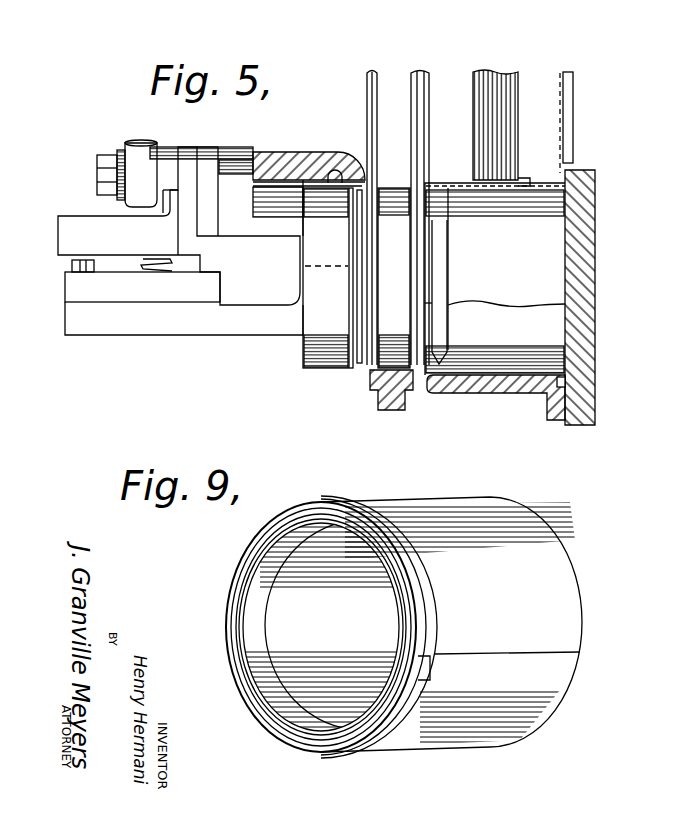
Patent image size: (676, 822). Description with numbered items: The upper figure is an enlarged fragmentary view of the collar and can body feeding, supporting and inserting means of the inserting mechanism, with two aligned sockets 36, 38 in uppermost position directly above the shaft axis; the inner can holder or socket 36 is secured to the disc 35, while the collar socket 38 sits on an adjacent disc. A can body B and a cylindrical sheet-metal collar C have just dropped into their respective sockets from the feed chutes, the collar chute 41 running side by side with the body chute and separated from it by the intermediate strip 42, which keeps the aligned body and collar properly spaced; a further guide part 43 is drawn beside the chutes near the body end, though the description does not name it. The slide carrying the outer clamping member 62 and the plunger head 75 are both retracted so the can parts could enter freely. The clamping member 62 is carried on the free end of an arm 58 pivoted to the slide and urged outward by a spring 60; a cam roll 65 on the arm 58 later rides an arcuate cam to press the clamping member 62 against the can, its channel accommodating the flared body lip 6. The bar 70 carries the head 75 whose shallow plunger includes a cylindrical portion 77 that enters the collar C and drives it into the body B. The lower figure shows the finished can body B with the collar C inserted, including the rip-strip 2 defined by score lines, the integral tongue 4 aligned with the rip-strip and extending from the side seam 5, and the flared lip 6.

In FIG. 5, the rip-strip 2 is at (448, 243).
In FIG. 9, the rip-strip 2 is at (393, 506).
In FIG. 9, the tongue 4 is at (430, 680).
In FIG. 9, the side seam 5 is at (535, 652).
In FIG. 5, the body lip 6 is at (428, 184).
In FIG. 9, the body lip 6 is at (228, 590).
In FIG. 5, the can body B is at (495, 266).
In FIG. 9, the can body B is at (530, 610).
In FIG. 5, the collar C is at (391, 190).
In FIG. 9, the collar C is at (258, 682).
In FIG. 5, the disc 35 is at (596, 208).
In FIG. 5, the socket 36 is at (521, 381).
In FIG. 5, the socket 38 is at (375, 383).
In FIG. 5, the chute 41 is at (367, 73).
In FIG. 5, the intermediate strip 42 is at (416, 73).
In FIG. 5, the knurled sleeve 43 is at (522, 178).
In FIG. 5, the arm 58 is at (76, 216).
In FIG. 5, the spring 60 is at (172, 263).
In FIG. 5, the clamping member 62 is at (300, 160).
In FIG. 5, the cam roll 65 is at (152, 143).
In FIG. 5, the bar 70 is at (150, 326).
In FIG. 5, the head 75 is at (312, 336).
In FIG. 5, the cylindrical portion 77 is at (350, 327).